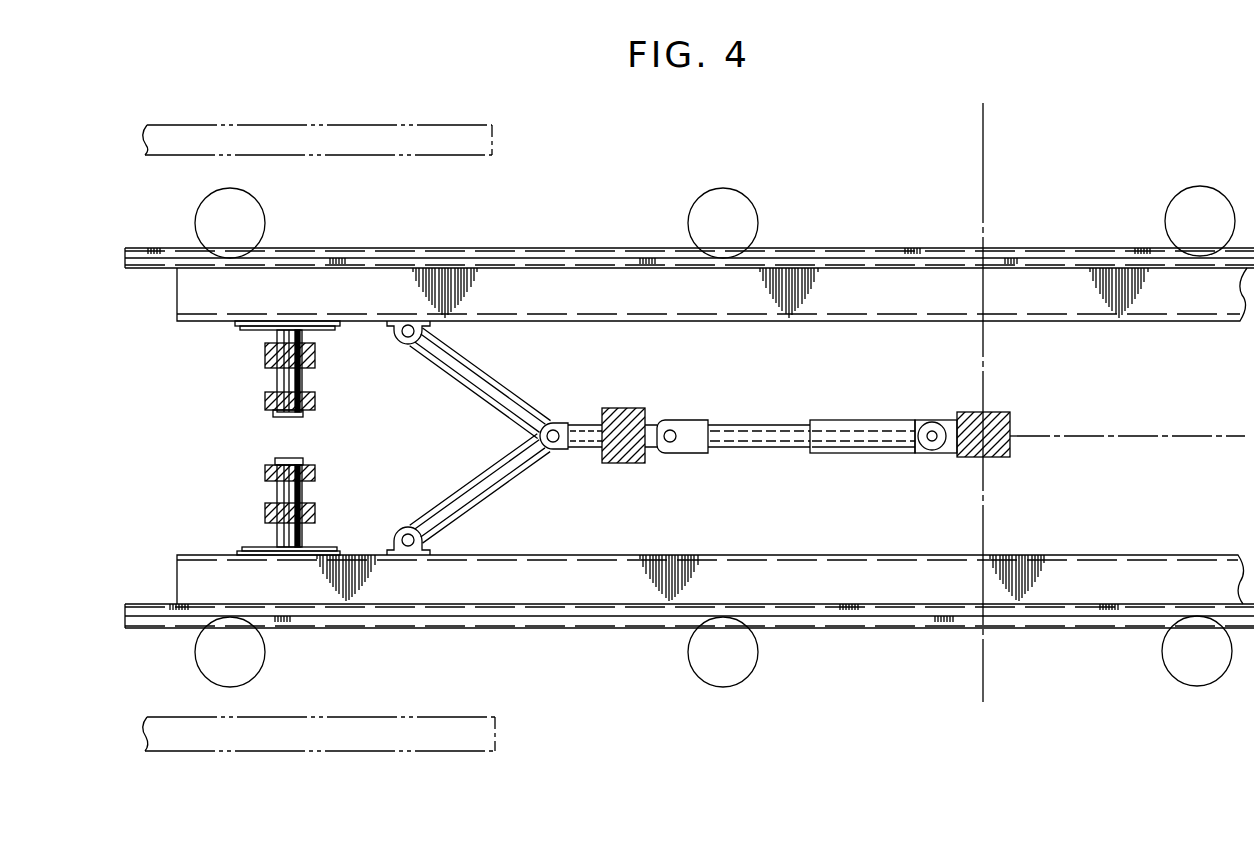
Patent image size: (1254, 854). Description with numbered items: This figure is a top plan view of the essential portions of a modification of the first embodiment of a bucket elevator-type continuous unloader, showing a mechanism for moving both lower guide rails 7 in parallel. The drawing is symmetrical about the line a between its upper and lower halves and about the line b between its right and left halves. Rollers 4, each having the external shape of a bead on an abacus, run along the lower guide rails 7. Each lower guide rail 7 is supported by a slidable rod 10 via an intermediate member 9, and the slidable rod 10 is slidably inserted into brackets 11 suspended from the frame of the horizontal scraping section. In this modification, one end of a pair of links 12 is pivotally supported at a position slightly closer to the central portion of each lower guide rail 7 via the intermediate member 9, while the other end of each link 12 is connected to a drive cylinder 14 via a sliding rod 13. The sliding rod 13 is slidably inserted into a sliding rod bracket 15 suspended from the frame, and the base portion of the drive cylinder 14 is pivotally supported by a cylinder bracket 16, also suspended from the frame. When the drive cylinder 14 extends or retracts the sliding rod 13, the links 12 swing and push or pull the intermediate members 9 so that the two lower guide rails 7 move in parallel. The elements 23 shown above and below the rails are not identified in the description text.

The roller 4 is at (757, 206).
The lower guide rail 7 is at (886, 247).
The intermediate member 9 is at (846, 302).
The slidable rod 10 is at (277, 378).
The bracket 11 is at (265, 355).
The link 12 is at (470, 386).
The sliding rod 13 is at (652, 449).
The drive cylinder 14 is at (880, 423).
The sliding rod bracket 15 is at (630, 408).
The cylinder bracket 16 is at (1000, 412).
The boards 23 is at (382, 156).
The line a is at (1080, 436).
The line b is at (986, 150).